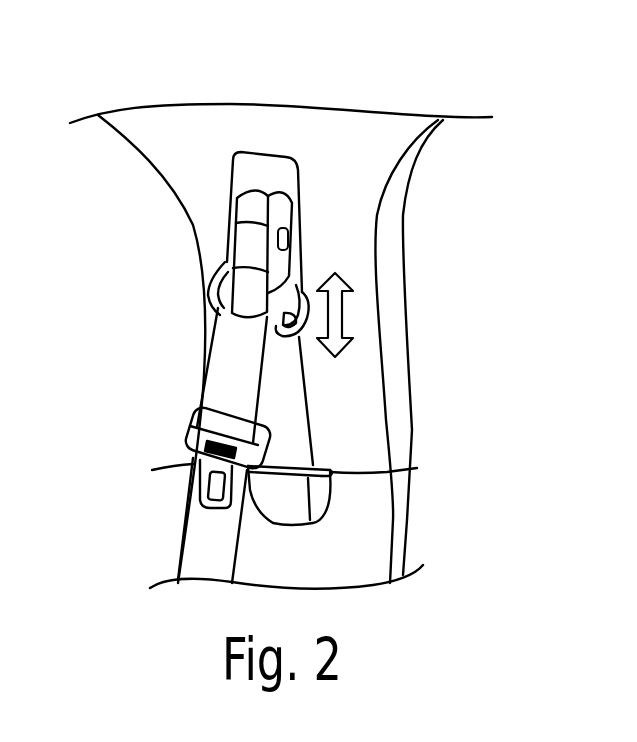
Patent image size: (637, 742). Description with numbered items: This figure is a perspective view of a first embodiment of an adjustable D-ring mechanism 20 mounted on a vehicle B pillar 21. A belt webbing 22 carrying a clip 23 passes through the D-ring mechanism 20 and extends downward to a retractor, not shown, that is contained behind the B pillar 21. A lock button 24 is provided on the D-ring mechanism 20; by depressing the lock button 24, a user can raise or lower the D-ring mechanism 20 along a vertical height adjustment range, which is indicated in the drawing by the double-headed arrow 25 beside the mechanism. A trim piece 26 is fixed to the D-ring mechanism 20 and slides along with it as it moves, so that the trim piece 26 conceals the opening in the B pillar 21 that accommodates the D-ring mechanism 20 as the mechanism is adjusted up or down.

The D-ring mechanism 20 is at (223, 247).
The B pillar 21 is at (205, 155).
The belt webbing 22 is at (218, 395).
The clip 23 is at (212, 447).
The lock button 24 is at (288, 243).
The direction of adjustment 25 is at (343, 305).
The trim piece 26 is at (280, 175).